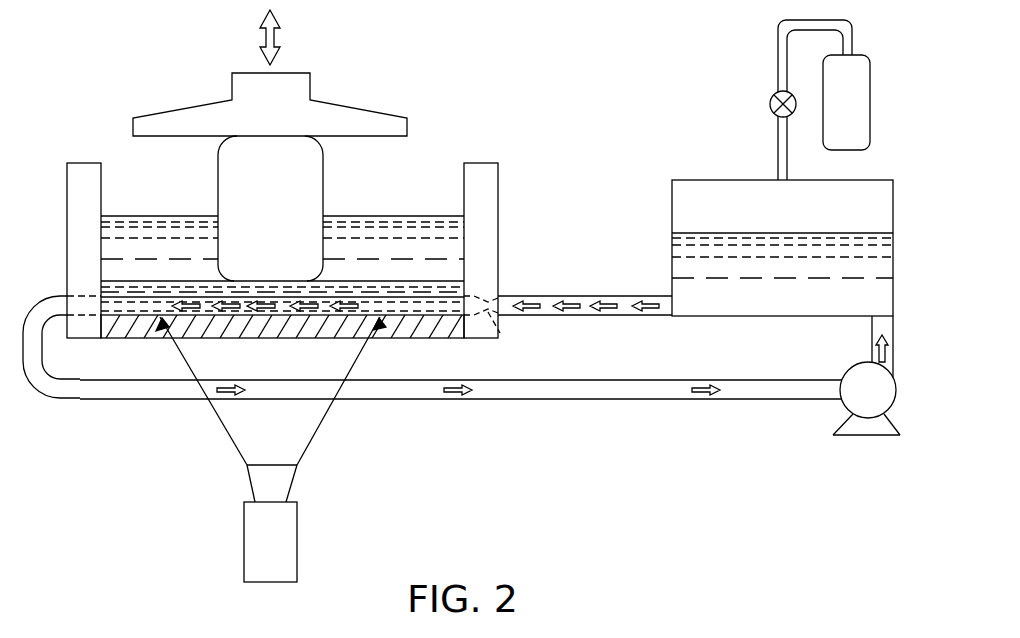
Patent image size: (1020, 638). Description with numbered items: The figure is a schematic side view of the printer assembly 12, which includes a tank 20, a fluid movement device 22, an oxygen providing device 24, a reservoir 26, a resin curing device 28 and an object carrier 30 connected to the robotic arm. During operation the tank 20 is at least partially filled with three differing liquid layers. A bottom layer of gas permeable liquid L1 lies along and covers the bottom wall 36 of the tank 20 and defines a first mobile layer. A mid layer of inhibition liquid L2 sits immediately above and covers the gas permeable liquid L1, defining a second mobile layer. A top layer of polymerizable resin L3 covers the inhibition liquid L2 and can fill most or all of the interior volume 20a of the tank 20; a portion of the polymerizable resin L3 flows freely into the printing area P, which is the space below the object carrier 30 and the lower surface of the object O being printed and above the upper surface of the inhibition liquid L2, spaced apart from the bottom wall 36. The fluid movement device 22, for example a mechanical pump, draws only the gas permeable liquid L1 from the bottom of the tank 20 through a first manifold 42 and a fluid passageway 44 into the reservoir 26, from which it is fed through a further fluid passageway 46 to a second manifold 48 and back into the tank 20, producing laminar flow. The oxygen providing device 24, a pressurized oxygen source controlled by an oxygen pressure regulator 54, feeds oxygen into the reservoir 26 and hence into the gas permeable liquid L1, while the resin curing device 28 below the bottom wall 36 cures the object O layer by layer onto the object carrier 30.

The printer assembly 12 is at (644, 49).
The tank 20 is at (305, 227).
The interior volume 20a is at (421, 238).
The fluid movement device 22 is at (851, 371).
The oxygen providing device 24 is at (871, 81).
The reservoir 26 is at (672, 263).
The resin curing device 28 is at (244, 540).
The object carrier 30 is at (362, 107).
The bottom wall 36 is at (408, 329).
The first manifold 42 is at (80, 318).
The fluid passageway 44 is at (400, 400).
The further fluid passageway 46 is at (622, 317).
The second manifold 48 is at (500, 333).
The oxygen pressure regulator 54 is at (770, 101).
The object O is at (291, 171).
The printing area P is at (257, 289).
The gas permeable liquid L1 is at (450, 305).
The inhibition liquid L2 is at (438, 293).
The polymerizable resin L3 is at (369, 250).